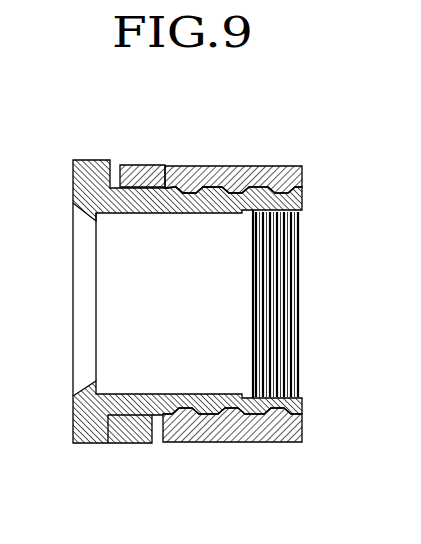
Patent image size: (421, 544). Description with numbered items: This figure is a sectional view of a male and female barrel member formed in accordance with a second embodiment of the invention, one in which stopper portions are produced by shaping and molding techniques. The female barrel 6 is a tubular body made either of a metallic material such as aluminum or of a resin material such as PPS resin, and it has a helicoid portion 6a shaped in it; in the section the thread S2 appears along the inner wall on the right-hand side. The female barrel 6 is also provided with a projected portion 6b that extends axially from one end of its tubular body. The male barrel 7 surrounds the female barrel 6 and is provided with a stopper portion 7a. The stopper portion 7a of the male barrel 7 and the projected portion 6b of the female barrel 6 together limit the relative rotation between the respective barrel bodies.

The male barrel 7 is at (100, 159).
The stopper portion 7a is at (135, 444).
The female barrel 6 is at (256, 275).
The helicoid portion 6a is at (206, 165).
The projected portion 6b is at (148, 164).
The internal thread S2 is at (302, 203).